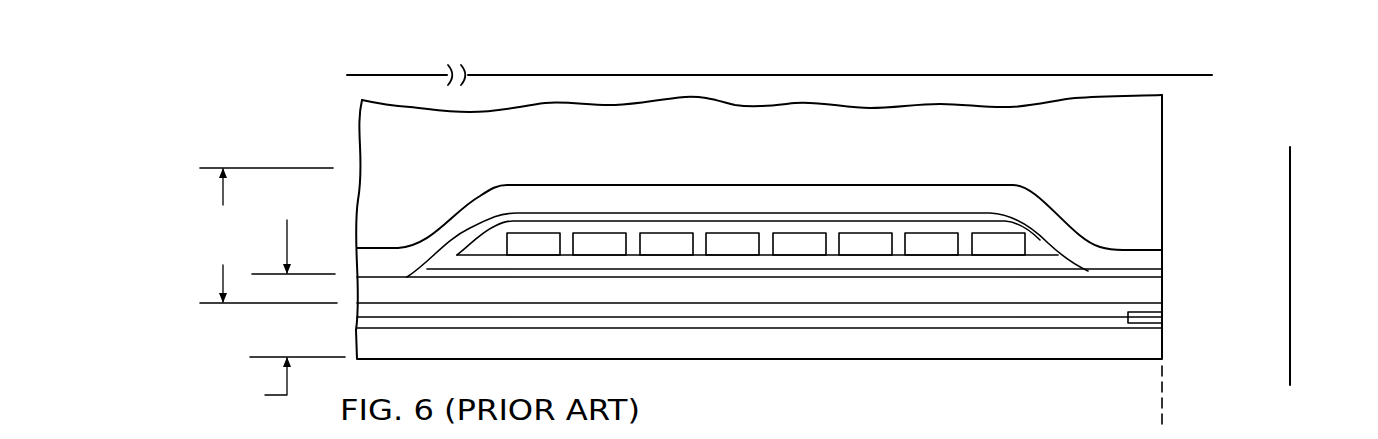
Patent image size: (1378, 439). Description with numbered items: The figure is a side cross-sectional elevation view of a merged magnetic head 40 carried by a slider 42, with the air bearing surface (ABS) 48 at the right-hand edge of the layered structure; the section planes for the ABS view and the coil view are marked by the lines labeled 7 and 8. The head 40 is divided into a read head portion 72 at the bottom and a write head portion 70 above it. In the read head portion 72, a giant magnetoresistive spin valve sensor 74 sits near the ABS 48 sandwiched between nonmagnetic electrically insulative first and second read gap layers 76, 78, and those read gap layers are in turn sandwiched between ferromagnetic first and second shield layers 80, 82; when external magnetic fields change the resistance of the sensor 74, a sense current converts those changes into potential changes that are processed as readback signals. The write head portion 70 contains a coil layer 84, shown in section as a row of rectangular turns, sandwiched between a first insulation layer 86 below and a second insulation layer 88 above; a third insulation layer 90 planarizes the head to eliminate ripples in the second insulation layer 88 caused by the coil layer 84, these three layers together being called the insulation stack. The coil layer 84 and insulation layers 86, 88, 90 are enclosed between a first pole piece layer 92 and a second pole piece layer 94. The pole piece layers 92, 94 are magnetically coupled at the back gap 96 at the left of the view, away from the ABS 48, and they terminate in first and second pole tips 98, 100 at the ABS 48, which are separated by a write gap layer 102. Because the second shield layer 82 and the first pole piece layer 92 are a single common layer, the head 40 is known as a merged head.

The section plane 7- 7 is at (1291, 167).
The section plane 8- 8 is at (369, 74).
The magnetic head 40 is at (343, 118).
The slider 42 is at (1143, 130).
The air bearing surface (ABS) 48 is at (1162, 375).
The write head portion 70 is at (242, 235).
The read head portion 72 is at (246, 379).
The spin valve sensor 74 is at (1165, 318).
The first read gap layer 76 is at (823, 328).
The second read gap layer 78 is at (785, 300).
The first shield layer 80 is at (915, 340).
The second shield layer 82 is at (759, 351).
The coil layer 84 is at (800, 245).
The first insulation layer 86 is at (720, 265).
The second insulation layer 88 is at (1042, 248).
The third insulation layer 90 is at (530, 215).
The first pole piece layer 92 is at (1010, 293).
The second pole piece layer 94 is at (912, 190).
The back gap 96 is at (381, 275).
The first pole tip 98 is at (1163, 296).
The second pole tip 100 is at (1160, 250).
The write gap layer 102 is at (1162, 273).